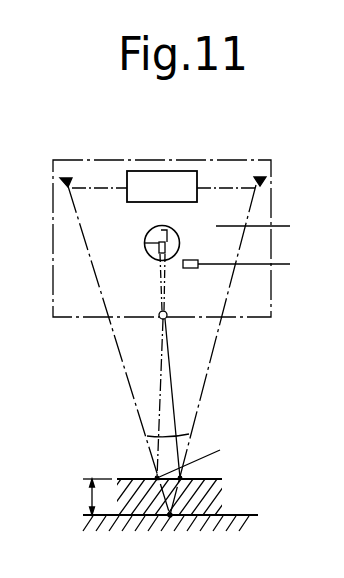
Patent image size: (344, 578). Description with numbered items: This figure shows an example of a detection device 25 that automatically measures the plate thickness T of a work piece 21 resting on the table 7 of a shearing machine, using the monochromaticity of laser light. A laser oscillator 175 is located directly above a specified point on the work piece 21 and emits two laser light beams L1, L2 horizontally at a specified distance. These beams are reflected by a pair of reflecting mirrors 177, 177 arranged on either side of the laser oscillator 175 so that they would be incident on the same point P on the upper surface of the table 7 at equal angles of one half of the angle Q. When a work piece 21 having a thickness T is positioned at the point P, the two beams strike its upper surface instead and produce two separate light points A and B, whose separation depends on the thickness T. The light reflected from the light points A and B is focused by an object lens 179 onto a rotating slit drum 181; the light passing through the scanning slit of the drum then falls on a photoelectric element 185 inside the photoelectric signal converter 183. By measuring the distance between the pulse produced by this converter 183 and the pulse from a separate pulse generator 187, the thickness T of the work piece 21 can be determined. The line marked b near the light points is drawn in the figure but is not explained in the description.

The detection device 25 is at (242, 156).
The laser oscillator 175 is at (160, 172).
The reflecting mirror 177 is at (66, 177).
The laser light beam L1 is at (118, 189).
The laser light beam L2 is at (231, 188).
The photoelectric signal converter 183 is at (147, 241).
The photoelectric element 185 is at (168, 247).
The rotating slit drum 181 is at (152, 263).
The pulse generator 187 is at (192, 270).
The object lens 179 is at (167, 318).
The angle Q is at (178, 436).
The reference line b is at (208, 451).
The light point A is at (157, 478).
The light point B is at (160, 479).
The work piece 21 is at (190, 497).
The table 7 is at (238, 516).
The point P is at (170, 515).
The plate thickness T is at (92, 497).